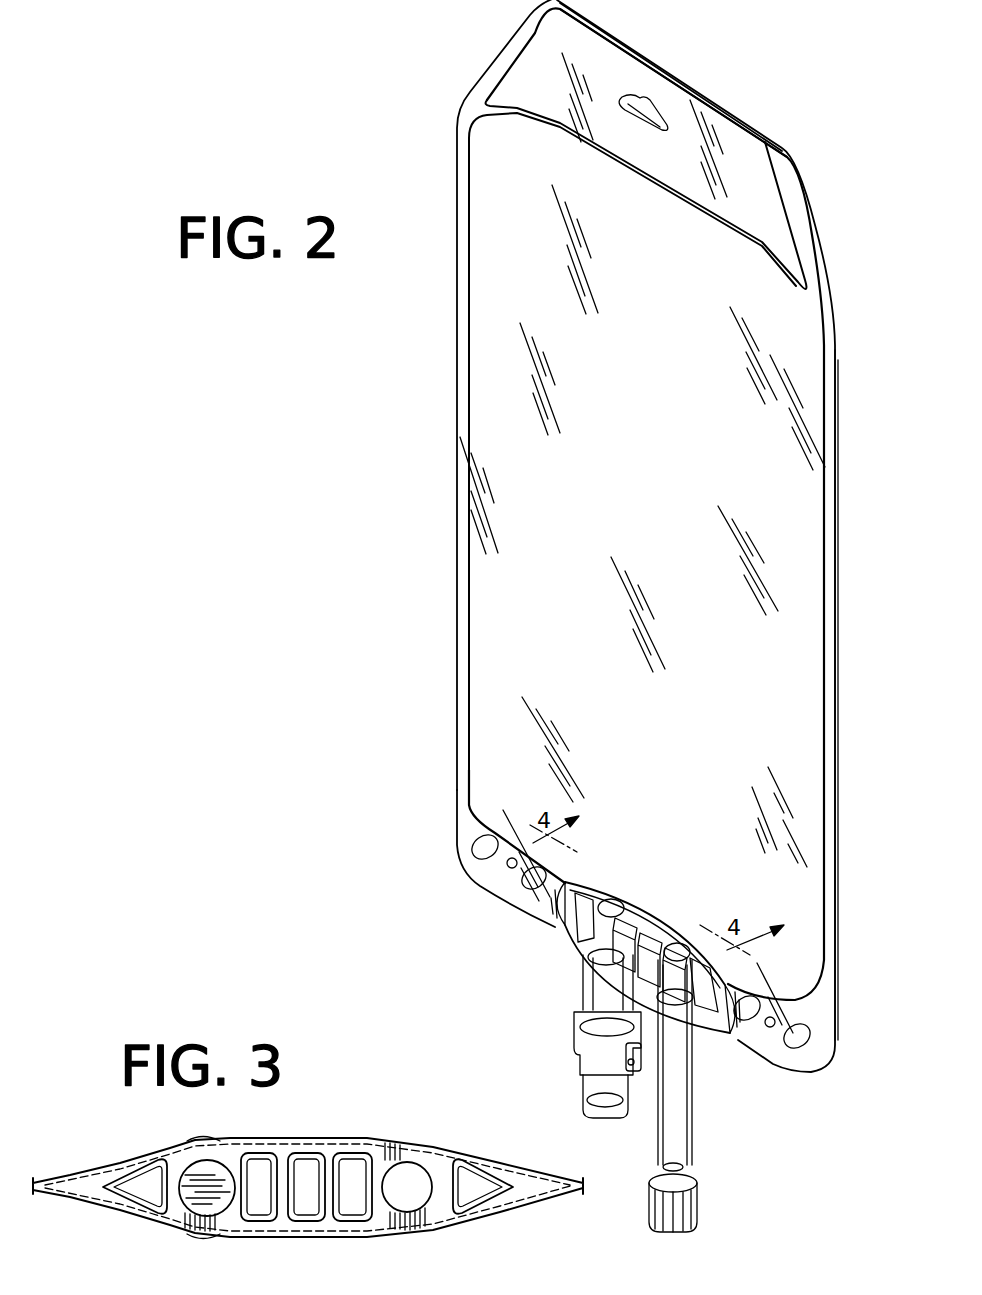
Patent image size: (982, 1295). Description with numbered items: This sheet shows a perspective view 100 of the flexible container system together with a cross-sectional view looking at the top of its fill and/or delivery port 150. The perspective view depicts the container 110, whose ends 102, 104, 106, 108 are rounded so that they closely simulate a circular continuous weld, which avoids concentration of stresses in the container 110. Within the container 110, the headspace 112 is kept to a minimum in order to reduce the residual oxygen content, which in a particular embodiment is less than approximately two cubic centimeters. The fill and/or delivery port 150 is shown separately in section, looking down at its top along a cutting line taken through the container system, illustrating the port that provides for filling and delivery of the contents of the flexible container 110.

In FIG. 2, the perspective view 100 is at (639, 616).
In FIG. 2, the end 102 is at (570, 2).
In FIG. 2, the end 104 is at (768, 142).
In FIG. 2, the end 106 is at (818, 1070).
In FIG. 2, the end 108 is at (456, 860).
In FIG. 2, the container 110 is at (836, 672).
In FIG. 2, the headspace 112 is at (661, 252).
In FIG. 3, the fill and/or delivery port 150 is at (397, 1118).